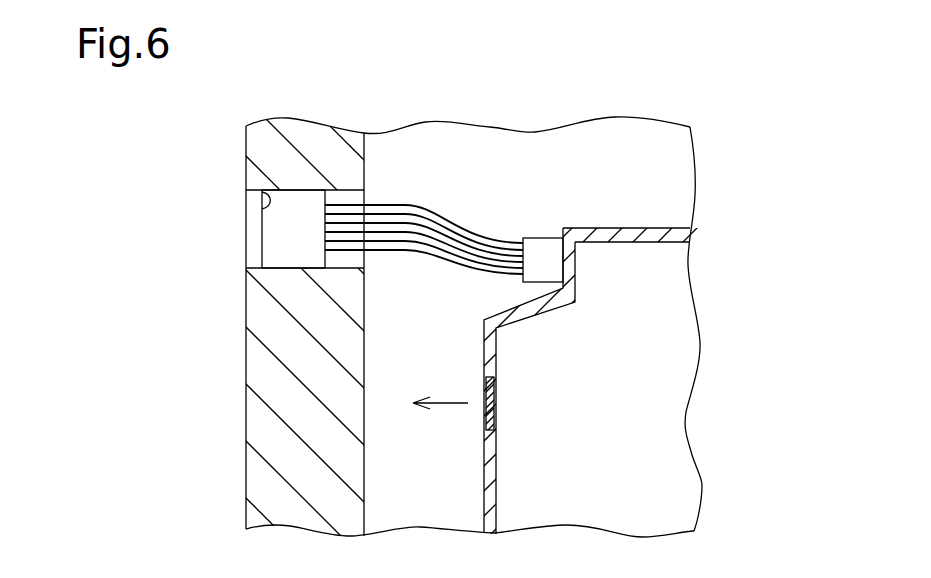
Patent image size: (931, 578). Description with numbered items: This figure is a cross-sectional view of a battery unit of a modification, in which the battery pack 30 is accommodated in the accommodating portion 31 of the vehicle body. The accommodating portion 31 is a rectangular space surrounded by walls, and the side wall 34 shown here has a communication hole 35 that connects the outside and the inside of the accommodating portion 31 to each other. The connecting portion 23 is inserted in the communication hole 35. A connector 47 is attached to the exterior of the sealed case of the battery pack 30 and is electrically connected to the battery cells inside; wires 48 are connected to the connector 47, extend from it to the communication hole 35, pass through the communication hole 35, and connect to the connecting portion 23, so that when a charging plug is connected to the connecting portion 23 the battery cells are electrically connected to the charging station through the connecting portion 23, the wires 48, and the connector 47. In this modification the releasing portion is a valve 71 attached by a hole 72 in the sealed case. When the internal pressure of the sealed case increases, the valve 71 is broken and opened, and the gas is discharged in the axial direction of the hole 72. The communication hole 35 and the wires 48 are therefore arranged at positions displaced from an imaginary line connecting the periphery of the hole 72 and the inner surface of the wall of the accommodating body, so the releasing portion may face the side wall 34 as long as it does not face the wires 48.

The connecting portion 23 is at (274, 235).
The battery pack 30 is at (665, 228).
The accommodating portion 31 is at (474, 327).
The side wall 34 is at (258, 366).
The communication hole 35 is at (268, 205).
The connector 47 is at (538, 243).
The wires 48 is at (412, 248).
The valve 71 is at (506, 389).
The hole 72 is at (496, 421).